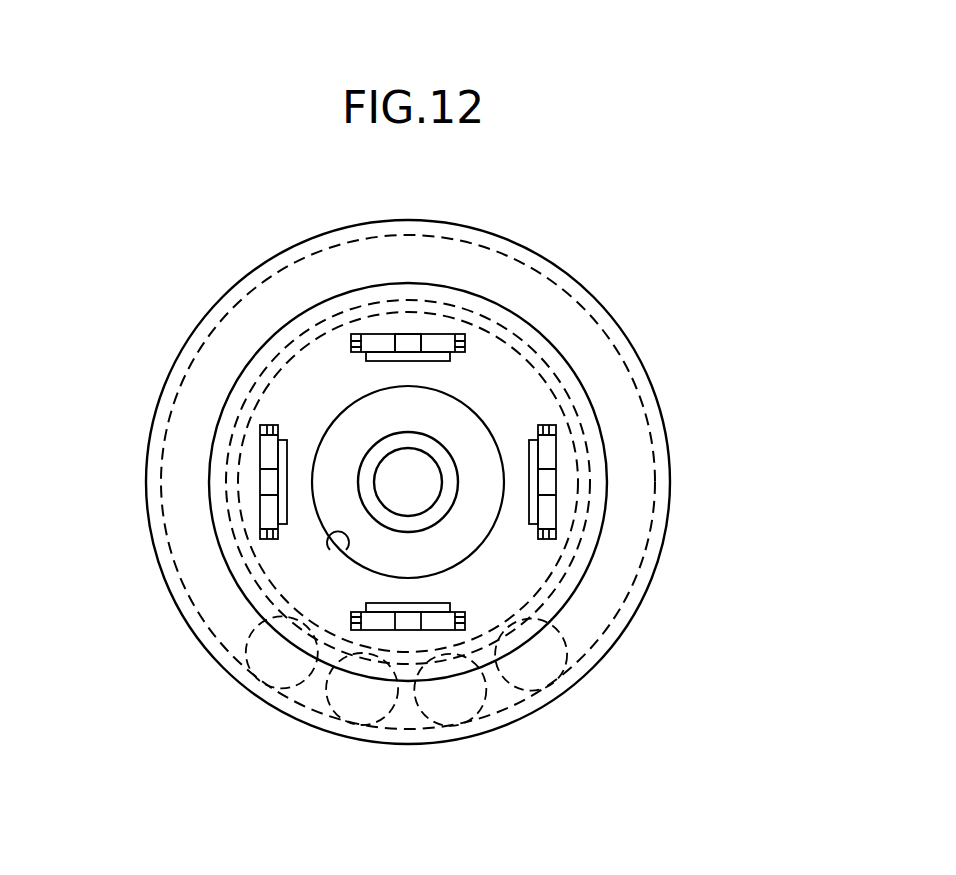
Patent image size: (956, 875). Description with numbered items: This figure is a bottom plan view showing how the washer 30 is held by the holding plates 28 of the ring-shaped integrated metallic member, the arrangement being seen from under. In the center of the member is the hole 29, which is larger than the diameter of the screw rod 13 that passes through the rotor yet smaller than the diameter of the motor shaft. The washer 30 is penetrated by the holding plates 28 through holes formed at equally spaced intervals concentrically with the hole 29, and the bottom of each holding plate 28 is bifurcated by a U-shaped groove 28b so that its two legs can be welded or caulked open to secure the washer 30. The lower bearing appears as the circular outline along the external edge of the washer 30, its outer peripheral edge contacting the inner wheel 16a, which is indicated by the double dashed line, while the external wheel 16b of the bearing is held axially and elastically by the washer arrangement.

The screw rod 13 is at (407, 496).
The inner wheel 16a is at (578, 532).
The external wheel 16b is at (657, 507).
The holding plate 28 is at (375, 347).
The U-shaped groove 28b is at (412, 347).
The hole 29 is at (342, 553).
The washer 30 is at (510, 383).